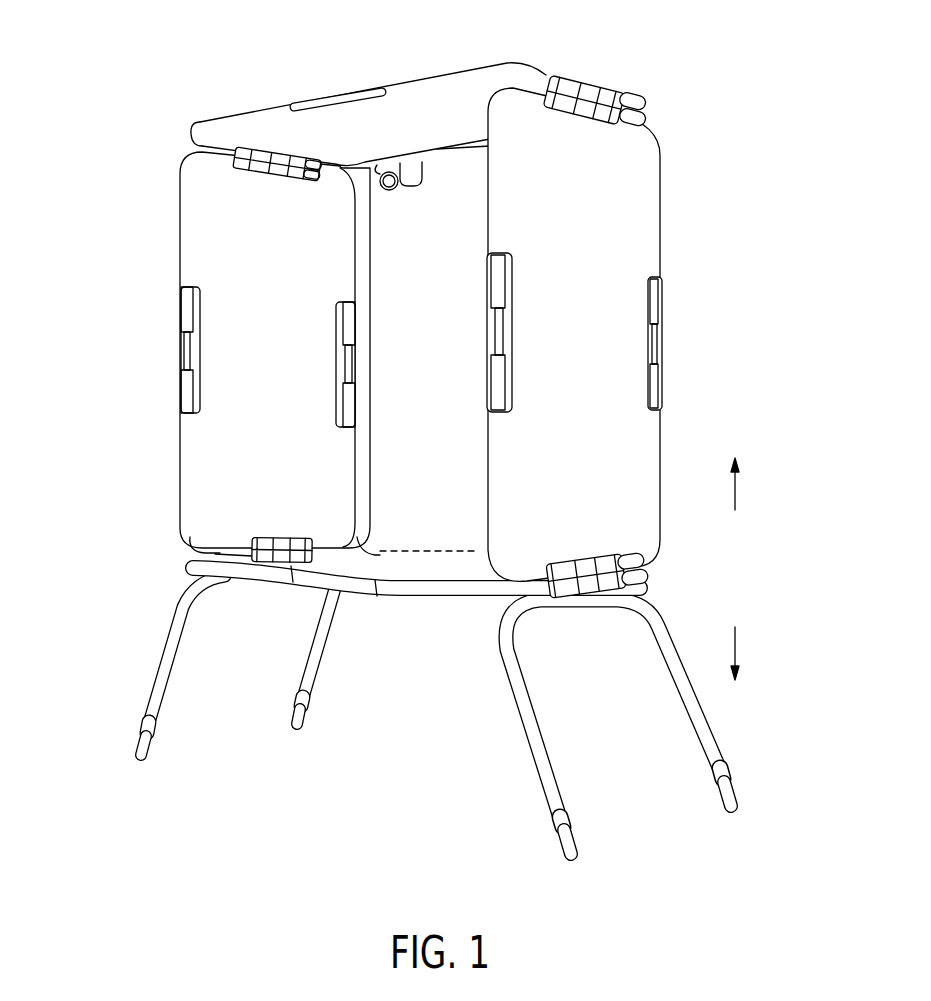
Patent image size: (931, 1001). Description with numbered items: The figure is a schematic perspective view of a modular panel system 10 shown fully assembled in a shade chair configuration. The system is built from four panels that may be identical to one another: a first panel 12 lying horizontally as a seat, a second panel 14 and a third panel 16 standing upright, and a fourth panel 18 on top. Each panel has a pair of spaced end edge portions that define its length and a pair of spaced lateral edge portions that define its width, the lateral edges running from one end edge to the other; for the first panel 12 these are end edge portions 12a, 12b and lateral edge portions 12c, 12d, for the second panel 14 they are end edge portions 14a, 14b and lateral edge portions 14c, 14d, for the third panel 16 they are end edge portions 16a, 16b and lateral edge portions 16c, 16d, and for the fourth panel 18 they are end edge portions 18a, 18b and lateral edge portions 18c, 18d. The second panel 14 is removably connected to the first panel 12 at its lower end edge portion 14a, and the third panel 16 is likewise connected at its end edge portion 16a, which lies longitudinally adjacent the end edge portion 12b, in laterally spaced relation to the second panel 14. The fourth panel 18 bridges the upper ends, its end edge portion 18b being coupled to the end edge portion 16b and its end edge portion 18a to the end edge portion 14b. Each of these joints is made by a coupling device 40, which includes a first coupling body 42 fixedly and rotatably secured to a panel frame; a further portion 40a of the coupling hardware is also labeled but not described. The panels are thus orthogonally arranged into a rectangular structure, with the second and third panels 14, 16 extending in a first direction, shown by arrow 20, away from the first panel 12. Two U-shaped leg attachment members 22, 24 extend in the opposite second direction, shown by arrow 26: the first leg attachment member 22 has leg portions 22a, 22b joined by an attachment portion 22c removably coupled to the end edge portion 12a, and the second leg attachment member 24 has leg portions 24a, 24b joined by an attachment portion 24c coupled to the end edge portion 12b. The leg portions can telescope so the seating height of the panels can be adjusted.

The modular panel system 10 is at (160, 484).
The first panel 12 is at (416, 629).
The end edge portion 12a is at (645, 582).
The end edge portion 12b is at (205, 548).
The lateral edge portion 12c is at (441, 598).
The lateral edge portion 12d is at (358, 536).
The second panel 14 is at (612, 445).
The end edge portion 14a is at (533, 570).
The end edge portion 14b is at (538, 72).
The lateral edge portion 14c is at (497, 236).
The lateral edge portion 14d is at (652, 210).
The third panel 16 is at (198, 232).
The end edge portion 16a is at (242, 545).
The end edge portion 16b is at (323, 172).
The lateral edge portion 16c is at (193, 432).
The lateral edge portion 16d is at (355, 265).
The fourth panel 18 is at (268, 118).
The end edge portion 18a is at (628, 98).
The end edge portion 18b is at (200, 131).
The lateral edge portion 18c is at (418, 83).
The lateral edge portion 18d is at (340, 170).
The arrow 20 is at (738, 492).
The first leg attachment member 22 is at (621, 727).
The leg portion 22a is at (550, 763).
The leg portion 22b is at (706, 727).
The attachment portion 22c is at (580, 603).
The second leg attachment member 24 is at (206, 683).
The leg portion 24a is at (155, 707).
The leg portion 24b is at (313, 673).
The attachment portion 24c is at (212, 584).
The arrow 26 is at (740, 646).
The coupling device 40 is at (437, 180).
The hinge bracket 40a is at (410, 183).
The first coupling body 42 is at (343, 163).